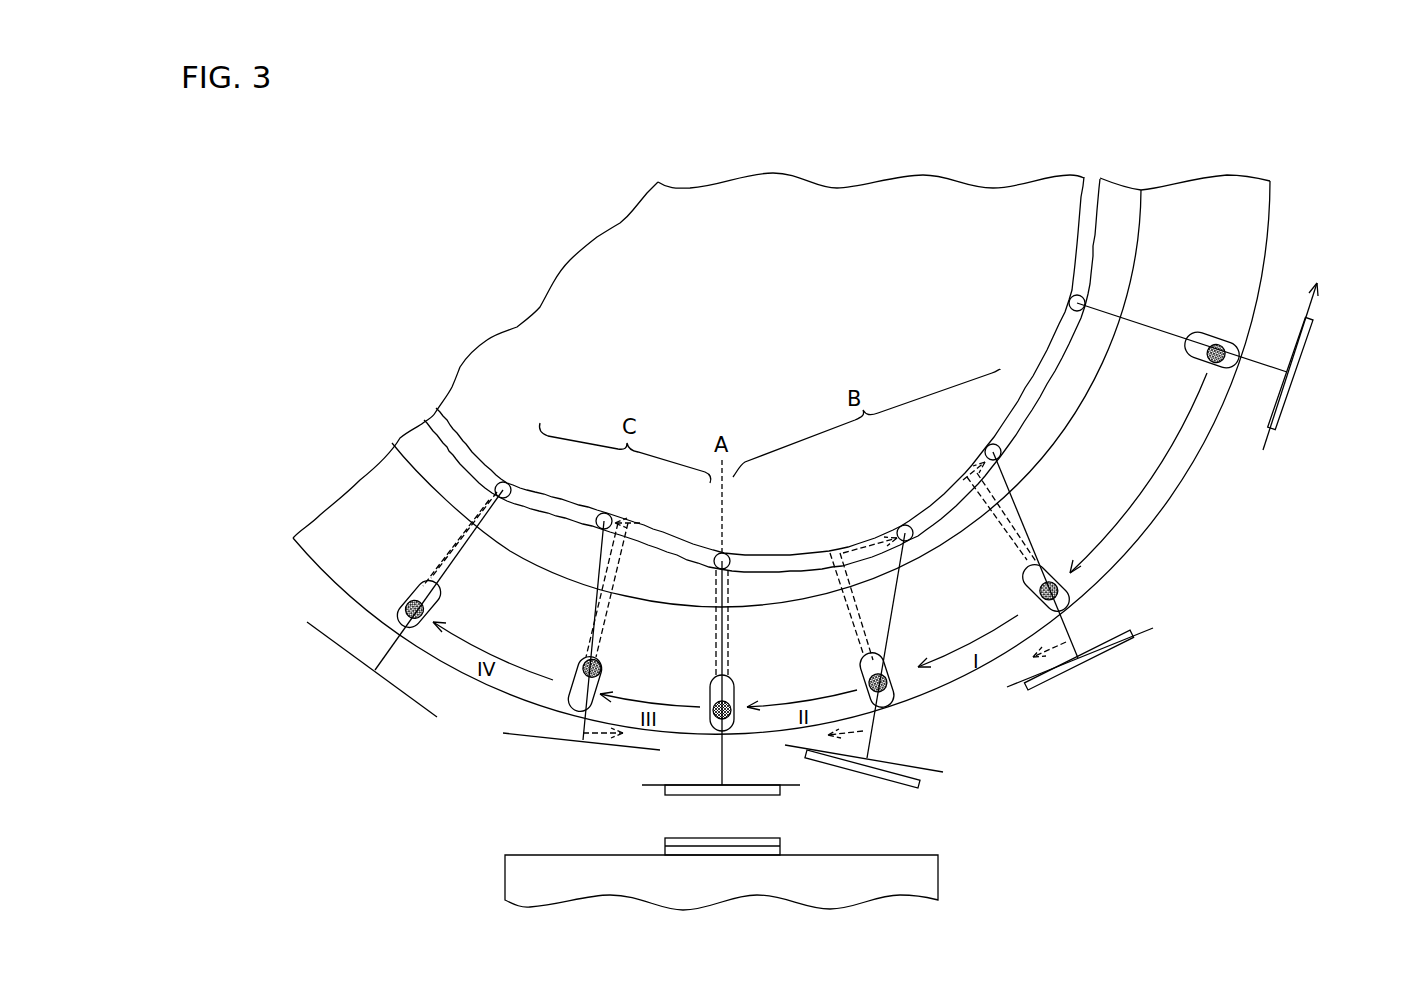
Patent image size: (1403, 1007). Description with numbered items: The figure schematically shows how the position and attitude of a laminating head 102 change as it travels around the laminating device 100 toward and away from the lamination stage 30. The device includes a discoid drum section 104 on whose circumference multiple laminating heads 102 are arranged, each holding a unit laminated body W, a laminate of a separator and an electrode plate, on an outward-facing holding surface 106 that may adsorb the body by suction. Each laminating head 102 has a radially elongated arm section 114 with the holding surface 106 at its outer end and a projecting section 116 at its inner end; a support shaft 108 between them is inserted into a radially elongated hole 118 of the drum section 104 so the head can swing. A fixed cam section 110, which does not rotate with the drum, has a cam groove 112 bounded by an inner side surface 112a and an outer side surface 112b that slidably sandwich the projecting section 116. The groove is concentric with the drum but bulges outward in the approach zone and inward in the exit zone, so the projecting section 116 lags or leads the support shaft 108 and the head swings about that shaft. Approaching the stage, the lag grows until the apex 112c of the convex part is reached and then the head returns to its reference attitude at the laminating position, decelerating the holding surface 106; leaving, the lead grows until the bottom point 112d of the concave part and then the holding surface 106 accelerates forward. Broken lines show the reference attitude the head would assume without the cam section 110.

The laminating device 100 is at (510, 240).
The laminating head 102 is at (1318, 284).
The drum section 104 is at (1273, 199).
The holding surface 106 is at (1268, 442).
The support shaft 108 is at (1225, 345).
The cam section 110 is at (1143, 217).
The cam groove 112 is at (762, 384).
The inner side surface 112a is at (1082, 238).
The outer side surface 112b is at (1095, 265).
The apex of the convex part 112c is at (907, 538).
The bottom point of the concave part 112d is at (608, 515).
The arm section 114 is at (1145, 328).
The projecting section 116 is at (1070, 310).
The elongated hole 118 is at (1230, 357).
The lamination stage 30 is at (938, 872).
The unit laminated body W is at (1307, 352).